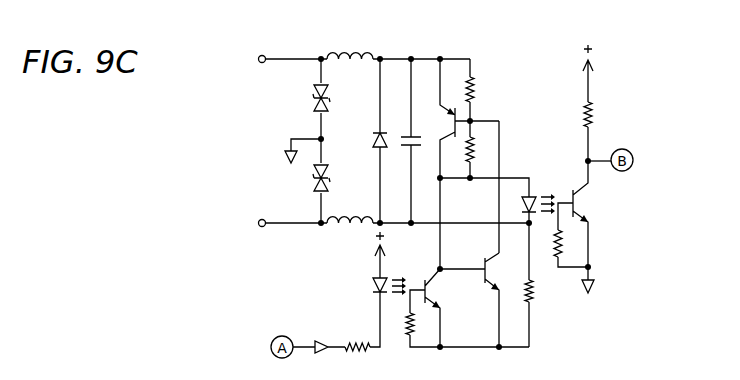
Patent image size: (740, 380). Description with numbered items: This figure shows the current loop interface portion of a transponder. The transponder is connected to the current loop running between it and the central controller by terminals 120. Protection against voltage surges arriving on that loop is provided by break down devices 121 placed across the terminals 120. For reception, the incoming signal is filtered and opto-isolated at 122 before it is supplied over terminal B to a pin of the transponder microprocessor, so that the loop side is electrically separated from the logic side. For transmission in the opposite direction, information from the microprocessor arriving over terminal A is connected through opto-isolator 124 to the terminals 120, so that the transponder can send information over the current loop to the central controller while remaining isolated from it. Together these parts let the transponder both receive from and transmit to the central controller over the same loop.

The terminals 120 is at (258, 53).
The break down devices 121 is at (357, 151).
The opto-isolator 122 is at (567, 189).
The opto-isolator 124 is at (420, 270).